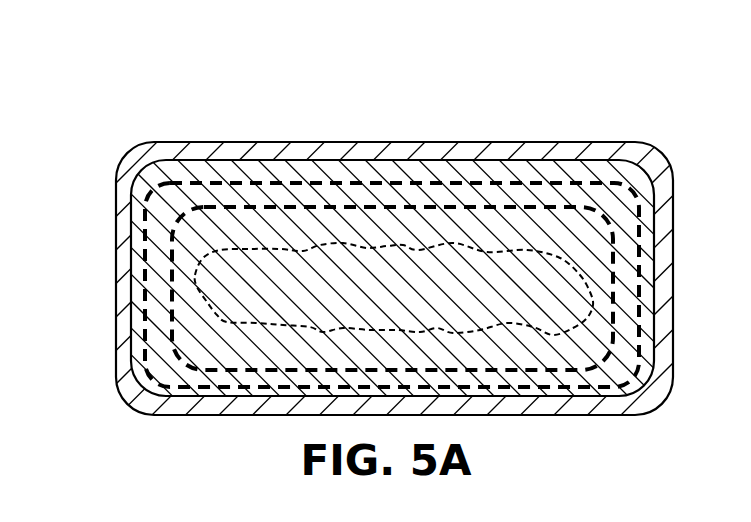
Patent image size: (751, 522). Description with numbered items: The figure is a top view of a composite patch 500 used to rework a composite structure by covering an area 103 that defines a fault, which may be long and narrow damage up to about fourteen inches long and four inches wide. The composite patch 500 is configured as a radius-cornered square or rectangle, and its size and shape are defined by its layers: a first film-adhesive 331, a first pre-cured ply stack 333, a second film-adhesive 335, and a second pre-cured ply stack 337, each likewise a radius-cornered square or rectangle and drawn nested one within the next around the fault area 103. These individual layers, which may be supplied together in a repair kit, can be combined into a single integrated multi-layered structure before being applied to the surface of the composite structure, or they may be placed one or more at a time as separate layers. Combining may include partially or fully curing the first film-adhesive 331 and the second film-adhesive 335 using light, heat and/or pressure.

The composite patch 500 is at (375, 221).
The first film-adhesive 331 is at (663, 182).
The first pre-cured ply stack 333 is at (267, 190).
The second film-adhesive 335 is at (412, 185).
The second pre-cured ply stack 337 is at (528, 173).
The area 103 is at (525, 272).